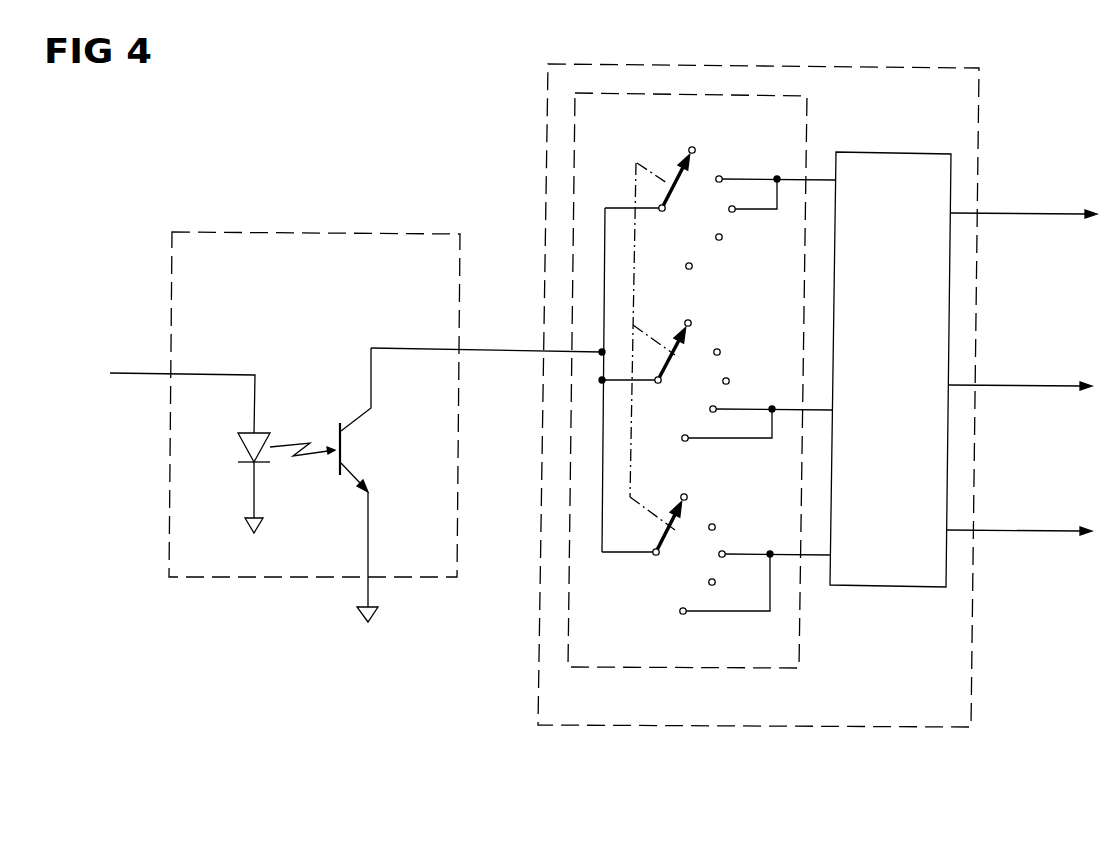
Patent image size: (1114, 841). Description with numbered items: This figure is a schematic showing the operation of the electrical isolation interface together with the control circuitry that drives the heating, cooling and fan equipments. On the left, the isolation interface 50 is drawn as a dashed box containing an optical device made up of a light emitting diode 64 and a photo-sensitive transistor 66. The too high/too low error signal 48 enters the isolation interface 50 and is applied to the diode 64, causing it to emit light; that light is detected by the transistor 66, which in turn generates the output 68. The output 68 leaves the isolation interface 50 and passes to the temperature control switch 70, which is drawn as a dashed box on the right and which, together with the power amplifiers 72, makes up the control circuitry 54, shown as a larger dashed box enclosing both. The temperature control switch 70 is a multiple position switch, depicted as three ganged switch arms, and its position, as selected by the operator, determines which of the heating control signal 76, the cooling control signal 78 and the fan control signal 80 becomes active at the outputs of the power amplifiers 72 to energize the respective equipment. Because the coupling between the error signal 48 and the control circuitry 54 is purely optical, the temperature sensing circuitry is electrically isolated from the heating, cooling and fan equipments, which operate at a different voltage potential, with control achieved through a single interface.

The too high/too low error signal 48 is at (150, 373).
The isolation interface 50 is at (318, 233).
The control circuitry 54 is at (822, 730).
The light emitting diode 64 is at (259, 433).
The photo-sensitive transistor 66 is at (343, 437).
The output 68 is at (513, 350).
The temperature control switch 70 is at (808, 106).
The power amplifiers 72 is at (900, 152).
The heating control signal 76 is at (1030, 213).
The cooling control signal 78 is at (1030, 385).
The fan control signal 80 is at (1025, 530).